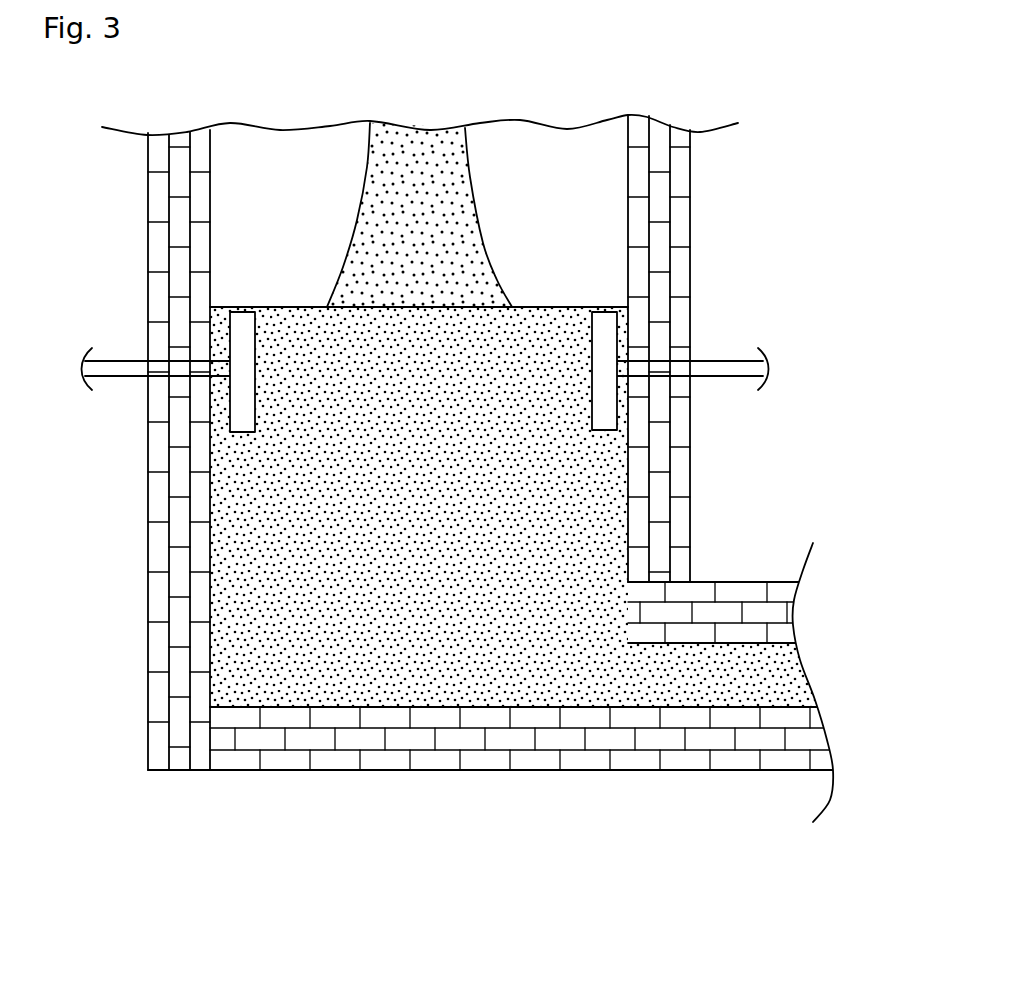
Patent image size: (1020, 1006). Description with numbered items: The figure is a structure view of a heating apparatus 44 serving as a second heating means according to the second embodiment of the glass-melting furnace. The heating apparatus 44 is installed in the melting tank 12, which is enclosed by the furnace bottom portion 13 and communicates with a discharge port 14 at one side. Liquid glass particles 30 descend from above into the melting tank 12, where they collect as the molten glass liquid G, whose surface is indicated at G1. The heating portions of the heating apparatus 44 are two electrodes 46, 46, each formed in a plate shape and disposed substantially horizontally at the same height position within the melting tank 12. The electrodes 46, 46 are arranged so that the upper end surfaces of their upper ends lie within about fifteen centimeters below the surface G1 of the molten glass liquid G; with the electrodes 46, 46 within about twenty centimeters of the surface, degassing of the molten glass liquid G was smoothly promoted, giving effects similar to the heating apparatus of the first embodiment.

The melting tank 12 is at (701, 176).
The furnace bottom portion 13 is at (477, 757).
The discharge port 14 is at (731, 594).
The liquid glass particles 30 is at (363, 218).
The heating apparatus 44 is at (740, 353).
The electrode 46 is at (242, 337).
The molten glass liquid G is at (395, 675).
The surface of granular material layer G1 is at (497, 317).